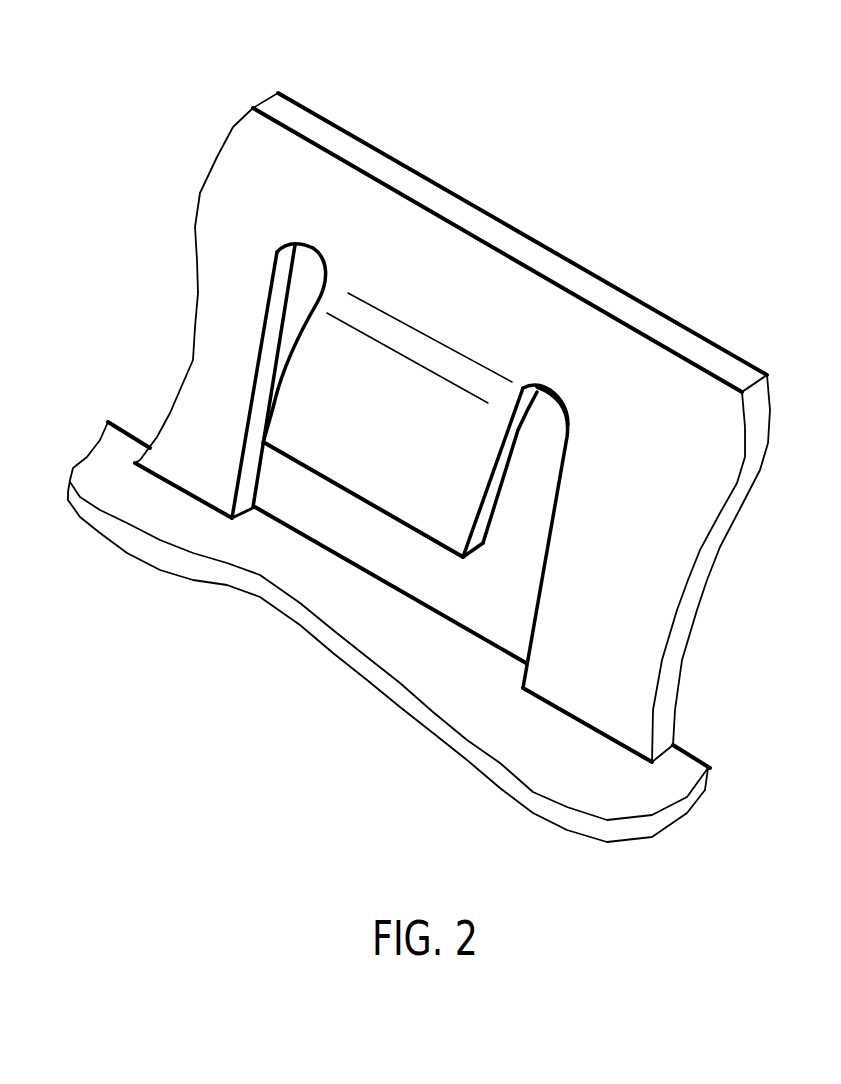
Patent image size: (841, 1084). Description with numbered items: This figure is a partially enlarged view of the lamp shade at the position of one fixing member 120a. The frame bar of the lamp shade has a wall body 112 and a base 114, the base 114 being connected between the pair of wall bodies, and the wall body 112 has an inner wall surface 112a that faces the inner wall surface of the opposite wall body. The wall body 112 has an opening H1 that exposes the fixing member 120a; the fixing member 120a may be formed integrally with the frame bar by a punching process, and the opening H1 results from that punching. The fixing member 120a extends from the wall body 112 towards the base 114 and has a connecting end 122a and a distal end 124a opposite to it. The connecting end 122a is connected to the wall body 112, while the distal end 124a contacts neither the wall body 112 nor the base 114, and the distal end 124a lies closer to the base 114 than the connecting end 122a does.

The wall body 112 is at (350, 157).
The inner wall surface 112a is at (580, 680).
The fixing member 120a is at (358, 272).
The connecting end 122a is at (540, 390).
The distal end 124a is at (480, 556).
The opening H1 is at (390, 561).
The base 114 is at (638, 790).